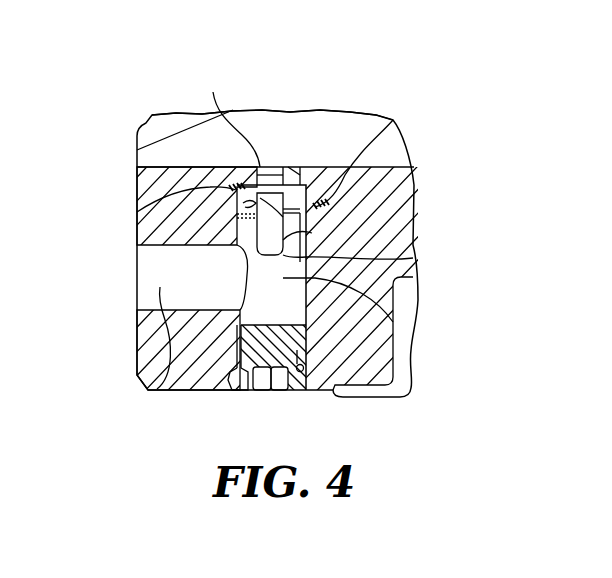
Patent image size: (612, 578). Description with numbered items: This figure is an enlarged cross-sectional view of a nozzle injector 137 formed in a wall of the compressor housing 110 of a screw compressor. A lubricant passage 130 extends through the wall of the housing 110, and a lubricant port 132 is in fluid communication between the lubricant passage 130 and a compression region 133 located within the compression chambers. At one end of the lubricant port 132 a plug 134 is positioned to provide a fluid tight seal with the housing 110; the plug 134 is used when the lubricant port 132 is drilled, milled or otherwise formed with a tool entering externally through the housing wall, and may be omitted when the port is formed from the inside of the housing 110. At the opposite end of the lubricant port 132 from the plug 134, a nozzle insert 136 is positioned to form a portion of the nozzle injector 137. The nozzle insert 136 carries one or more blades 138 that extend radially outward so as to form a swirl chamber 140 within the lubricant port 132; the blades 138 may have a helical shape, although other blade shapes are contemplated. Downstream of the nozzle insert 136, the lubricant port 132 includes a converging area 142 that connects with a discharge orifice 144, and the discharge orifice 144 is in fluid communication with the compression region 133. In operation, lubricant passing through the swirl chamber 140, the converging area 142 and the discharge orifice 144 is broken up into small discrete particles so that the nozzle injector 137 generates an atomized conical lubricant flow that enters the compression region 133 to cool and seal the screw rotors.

The compressor housing 110 is at (190, 357).
The lubricant passage 130 is at (157, 389).
The lubricant port 132 is at (394, 322).
The compression region 133 is at (355, 138).
The plug 134 is at (300, 372).
The nozzle insert 136 is at (416, 258).
The nozzle injector 137 is at (395, 121).
The blades 138 is at (300, 168).
The swirl chamber 140 is at (137, 212).
The converging area 142 is at (281, 170).
The discharge orifice 144 is at (225, 118).